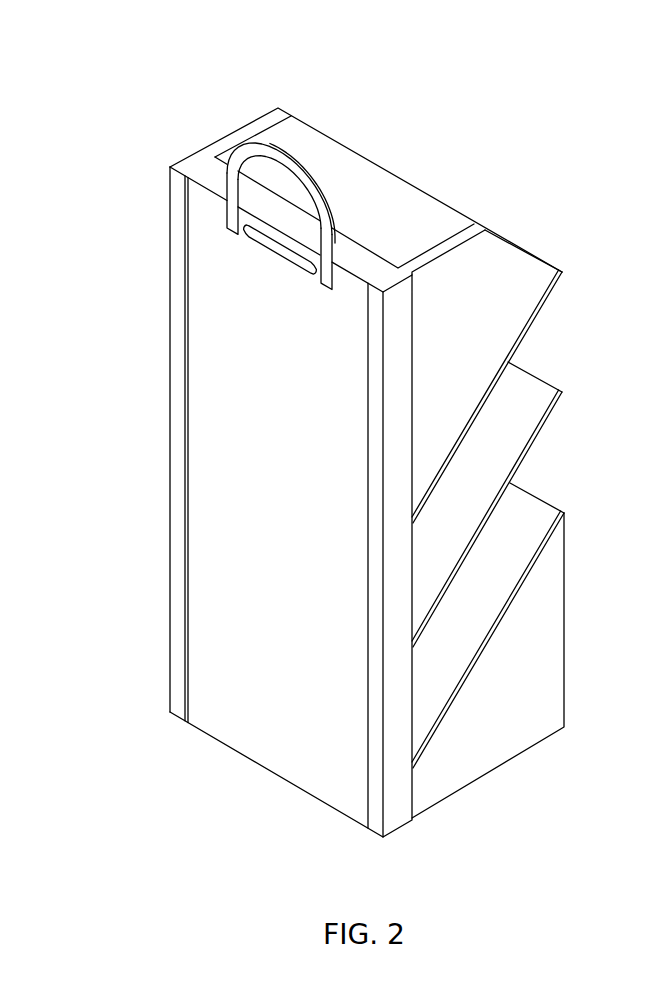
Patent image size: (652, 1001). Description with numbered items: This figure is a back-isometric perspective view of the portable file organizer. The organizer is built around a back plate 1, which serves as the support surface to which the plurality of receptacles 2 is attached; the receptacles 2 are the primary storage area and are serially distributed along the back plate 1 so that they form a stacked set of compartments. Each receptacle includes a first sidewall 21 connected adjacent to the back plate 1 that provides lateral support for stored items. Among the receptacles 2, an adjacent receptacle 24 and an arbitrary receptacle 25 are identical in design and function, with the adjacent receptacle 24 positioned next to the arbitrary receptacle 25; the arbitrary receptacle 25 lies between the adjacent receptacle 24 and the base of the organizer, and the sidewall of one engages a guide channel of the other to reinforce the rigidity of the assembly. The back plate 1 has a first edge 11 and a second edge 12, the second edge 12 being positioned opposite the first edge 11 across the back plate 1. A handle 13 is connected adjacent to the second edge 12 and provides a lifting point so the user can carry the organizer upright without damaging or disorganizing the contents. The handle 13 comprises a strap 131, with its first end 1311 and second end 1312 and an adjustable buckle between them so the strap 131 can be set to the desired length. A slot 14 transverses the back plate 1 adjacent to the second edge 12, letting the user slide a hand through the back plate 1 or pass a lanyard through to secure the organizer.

The back plate 1 is at (262, 745).
The first edge 11 is at (188, 178).
The second edge 12 is at (298, 800).
The handle 13 is at (175, 205).
The strap 131 is at (243, 163).
The first end 1311 is at (223, 240).
The second handle leg 1312 is at (316, 297).
The slot 14 is at (289, 276).
The plurality of receptacles 2 is at (519, 483).
The first sidewall 21 is at (480, 762).
The adjacent receptacle 24 is at (519, 466).
The arbitrary receptacle 25 is at (519, 599).